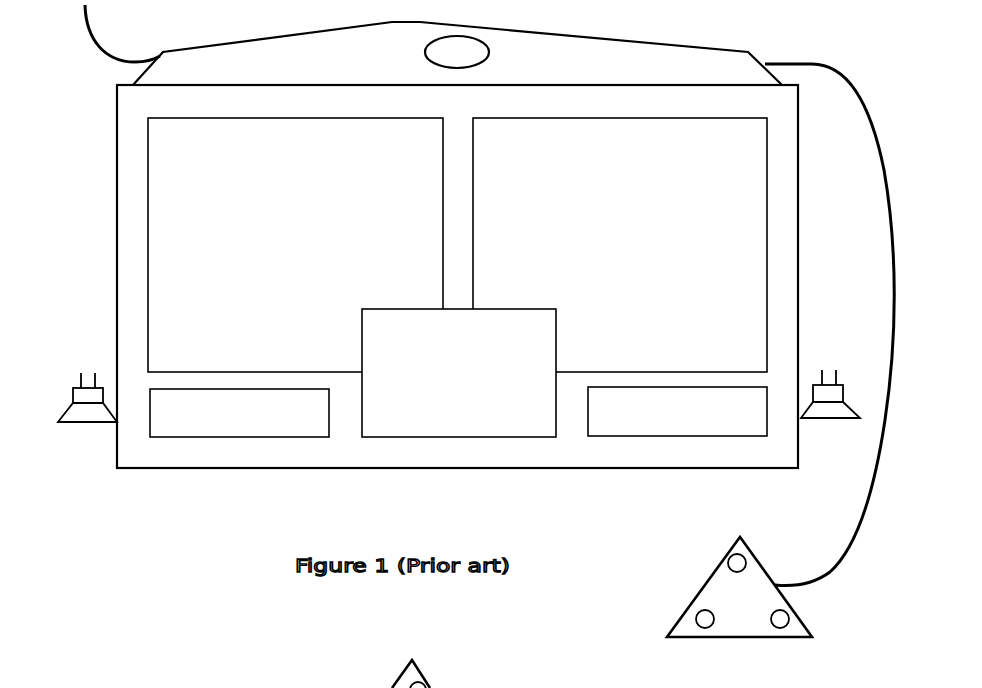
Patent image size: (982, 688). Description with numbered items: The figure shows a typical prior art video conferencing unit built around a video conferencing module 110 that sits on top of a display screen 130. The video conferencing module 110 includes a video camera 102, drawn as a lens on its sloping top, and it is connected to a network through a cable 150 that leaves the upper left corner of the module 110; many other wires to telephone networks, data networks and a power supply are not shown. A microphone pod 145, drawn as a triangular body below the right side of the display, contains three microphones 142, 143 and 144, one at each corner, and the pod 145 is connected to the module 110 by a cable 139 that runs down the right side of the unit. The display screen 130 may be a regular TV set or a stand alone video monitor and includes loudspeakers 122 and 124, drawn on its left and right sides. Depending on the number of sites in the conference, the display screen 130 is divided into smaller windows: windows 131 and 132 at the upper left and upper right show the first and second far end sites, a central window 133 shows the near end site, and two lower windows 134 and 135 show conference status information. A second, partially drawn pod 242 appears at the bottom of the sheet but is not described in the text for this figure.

The video camera 102 is at (477, 42).
The video conferencing module 110 is at (593, 33).
The loudspeaker 122 is at (88, 372).
The loudspeaker 124 is at (818, 370).
The display screen 130 is at (800, 130).
The window 131 is at (443, 228).
The window 132 is at (767, 252).
The window 133 is at (460, 437).
The window 134 is at (232, 437).
The window 135 is at (636, 437).
The cable 139 is at (777, 62).
The microphone 142 is at (790, 605).
The microphone 143 is at (700, 605).
The microphone 144 is at (744, 540).
The microphone pod 145 is at (735, 640).
The cable 150 is at (97, 37).
The second microphone pod 242 is at (418, 676).